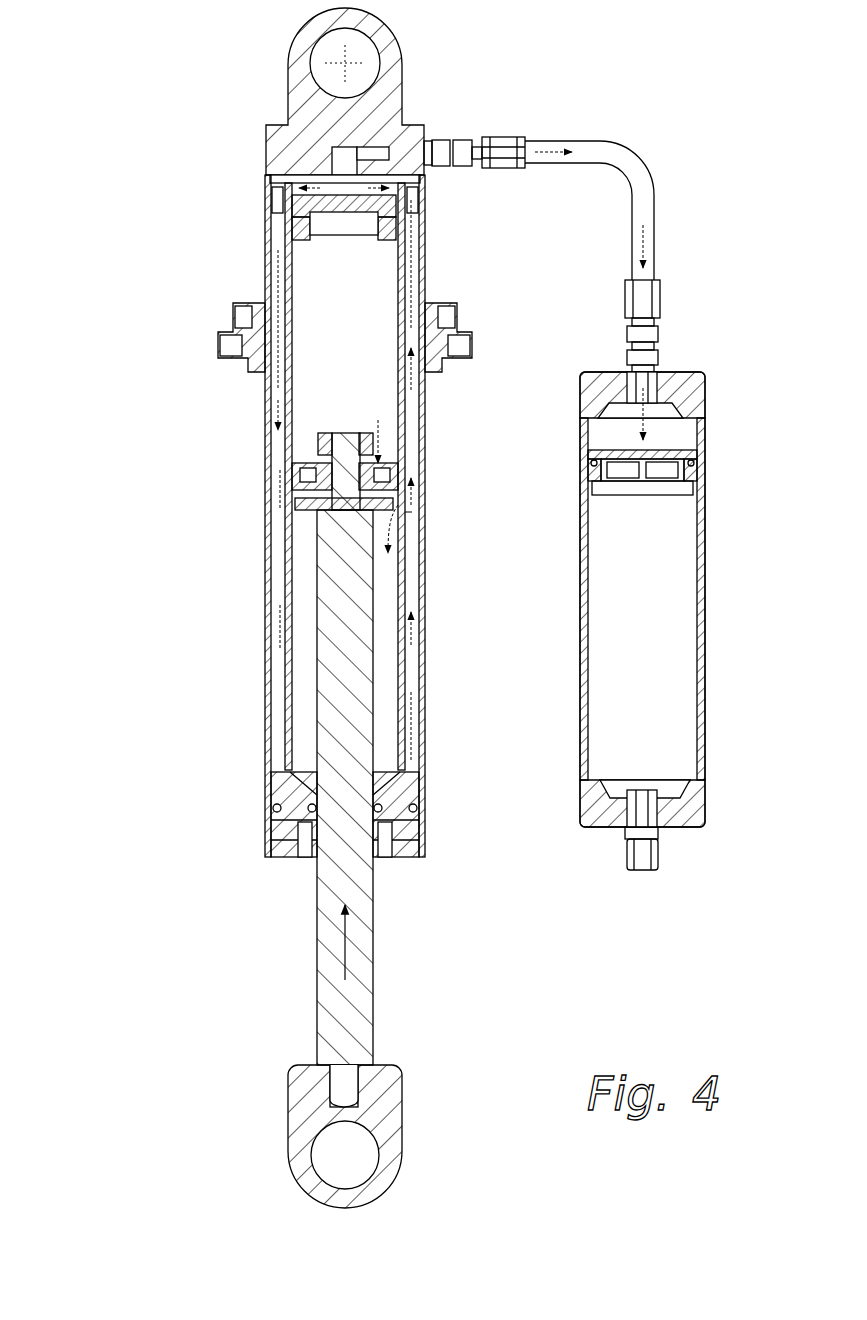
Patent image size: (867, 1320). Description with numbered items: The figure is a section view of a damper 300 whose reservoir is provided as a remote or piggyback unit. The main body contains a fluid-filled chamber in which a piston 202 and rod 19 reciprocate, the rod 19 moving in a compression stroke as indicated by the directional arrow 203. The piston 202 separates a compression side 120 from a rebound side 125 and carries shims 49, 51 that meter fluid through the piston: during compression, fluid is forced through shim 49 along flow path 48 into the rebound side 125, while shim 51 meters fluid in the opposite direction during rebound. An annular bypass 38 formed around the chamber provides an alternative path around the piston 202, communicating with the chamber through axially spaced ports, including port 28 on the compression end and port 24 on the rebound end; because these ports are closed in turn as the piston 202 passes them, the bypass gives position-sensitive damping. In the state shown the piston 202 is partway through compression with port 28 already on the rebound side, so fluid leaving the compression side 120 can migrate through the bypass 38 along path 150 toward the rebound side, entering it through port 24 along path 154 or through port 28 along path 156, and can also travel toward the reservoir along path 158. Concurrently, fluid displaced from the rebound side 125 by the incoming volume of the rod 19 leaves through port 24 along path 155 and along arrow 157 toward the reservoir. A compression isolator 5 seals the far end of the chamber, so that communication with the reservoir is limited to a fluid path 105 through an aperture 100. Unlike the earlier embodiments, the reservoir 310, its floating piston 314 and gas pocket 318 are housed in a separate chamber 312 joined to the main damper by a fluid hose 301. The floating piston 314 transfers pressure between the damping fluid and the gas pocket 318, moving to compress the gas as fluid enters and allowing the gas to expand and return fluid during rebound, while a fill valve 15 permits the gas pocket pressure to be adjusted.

The damper 300 is at (152, 70).
The compression isolator 5 is at (333, 197).
The fluid path 105 is at (290, 202).
The aperture 100 is at (295, 220).
The compression side 120 is at (310, 290).
The rebound side 125 is at (305, 722).
The path 150 is at (275, 405).
The shim 51 is at (305, 460).
The path 156 is at (272, 490).
The port 28 is at (306, 518).
The path 154 is at (280, 627).
The port 24 is at (307, 652).
The annular bypass 38 is at (280, 751).
The piston 202 is at (343, 440).
The path 158 is at (408, 380).
The flow path 48 is at (380, 448).
The shim 49 is at (403, 498).
The arrow 157 is at (410, 512).
The path 155 is at (423, 635).
The directional arrow 203 is at (349, 946).
The rod 19 is at (373, 1025).
The fluid hose 301 is at (633, 156).
The reservoir 310 is at (709, 621).
The separate chamber 312 is at (705, 606).
The floating piston 314 is at (700, 468).
The gas pocket 318 is at (670, 703).
The fill valve 15 is at (661, 857).